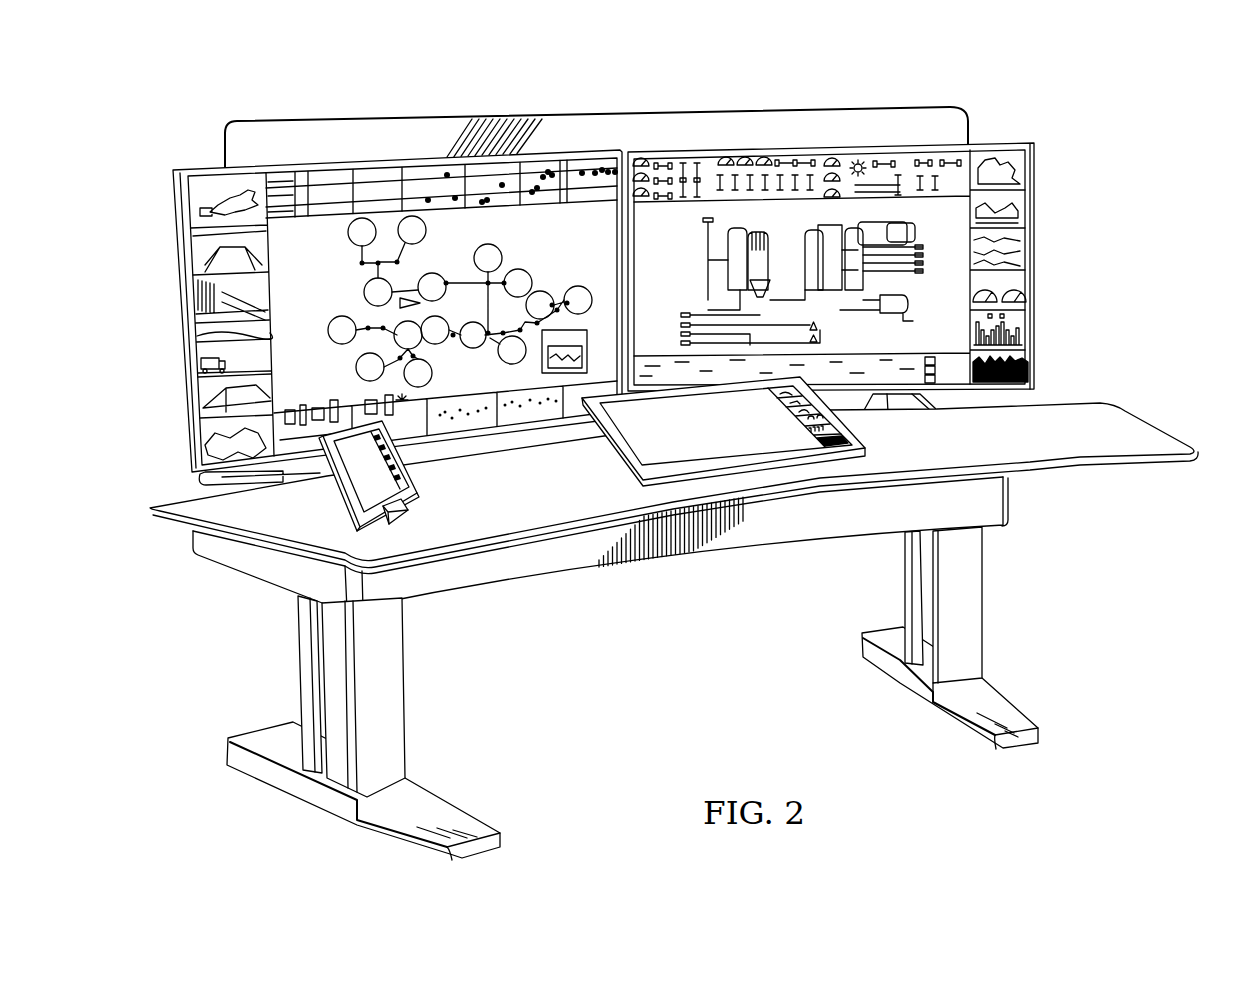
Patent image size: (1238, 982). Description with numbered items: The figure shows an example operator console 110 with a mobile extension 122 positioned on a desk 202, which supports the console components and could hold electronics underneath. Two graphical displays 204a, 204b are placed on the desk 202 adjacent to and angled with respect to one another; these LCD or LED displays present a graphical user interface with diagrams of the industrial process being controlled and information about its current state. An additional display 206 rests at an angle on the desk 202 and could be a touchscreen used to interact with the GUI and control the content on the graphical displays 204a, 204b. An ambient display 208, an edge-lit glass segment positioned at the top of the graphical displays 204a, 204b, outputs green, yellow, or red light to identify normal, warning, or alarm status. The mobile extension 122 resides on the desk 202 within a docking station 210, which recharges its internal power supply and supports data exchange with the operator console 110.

The operator console 110 is at (167, 104).
The desk 202 is at (737, 561).
The graphical display 204a is at (170, 317).
The graphical display 204b is at (1045, 255).
The additional display 206 is at (606, 460).
The ambient display 208 is at (590, 105).
The mobile extension 122 is at (335, 497).
The docking station 210 is at (407, 518).